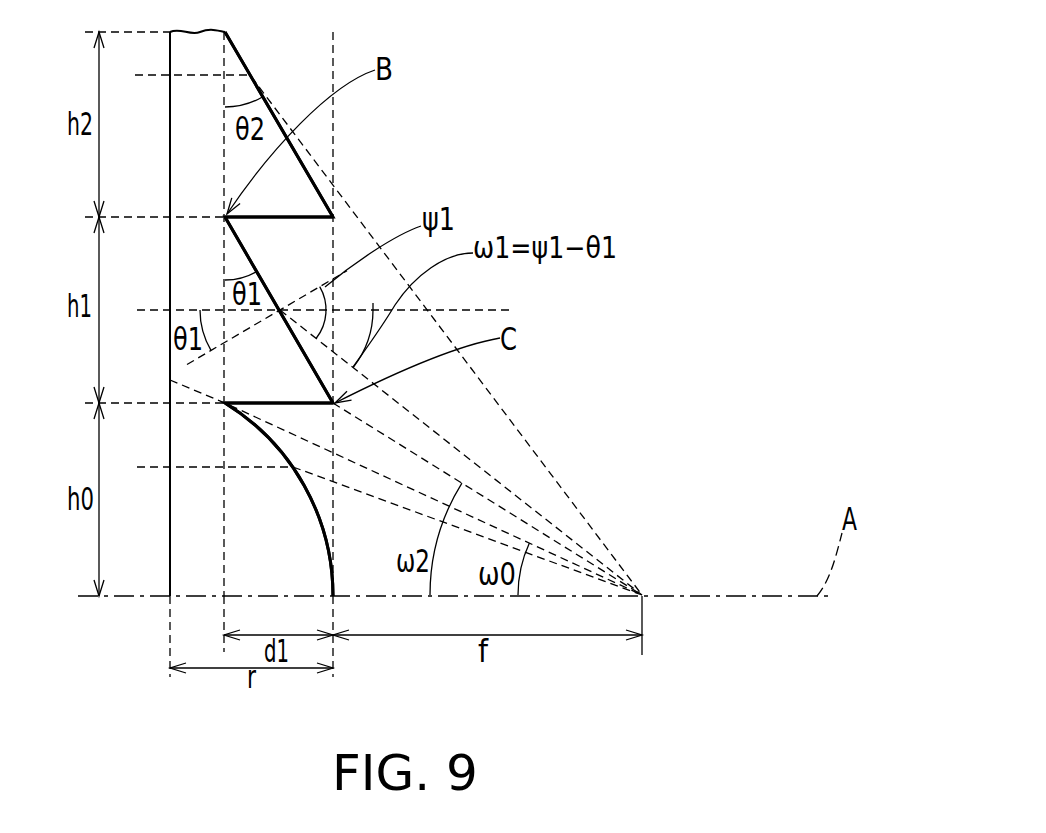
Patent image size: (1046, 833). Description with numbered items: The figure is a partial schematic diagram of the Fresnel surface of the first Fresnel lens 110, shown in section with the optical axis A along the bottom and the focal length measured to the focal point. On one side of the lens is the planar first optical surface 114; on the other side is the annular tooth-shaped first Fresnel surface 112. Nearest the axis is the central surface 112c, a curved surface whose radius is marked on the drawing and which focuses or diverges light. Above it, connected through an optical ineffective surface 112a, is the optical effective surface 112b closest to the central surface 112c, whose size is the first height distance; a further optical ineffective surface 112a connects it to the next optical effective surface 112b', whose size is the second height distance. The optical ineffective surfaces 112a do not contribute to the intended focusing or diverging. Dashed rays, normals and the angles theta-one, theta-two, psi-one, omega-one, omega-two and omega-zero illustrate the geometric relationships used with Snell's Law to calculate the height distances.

The first Fresnel lens 110 is at (623, 77).
The first Fresnel surface 112 is at (243, 62).
The optical ineffective surface 112a is at (291, 218).
The optical effective surface 112b is at (407, 310).
The optical effective surface 112b' is at (339, 124).
The central surface 112c is at (320, 515).
The first optical surface 114 is at (170, 160).